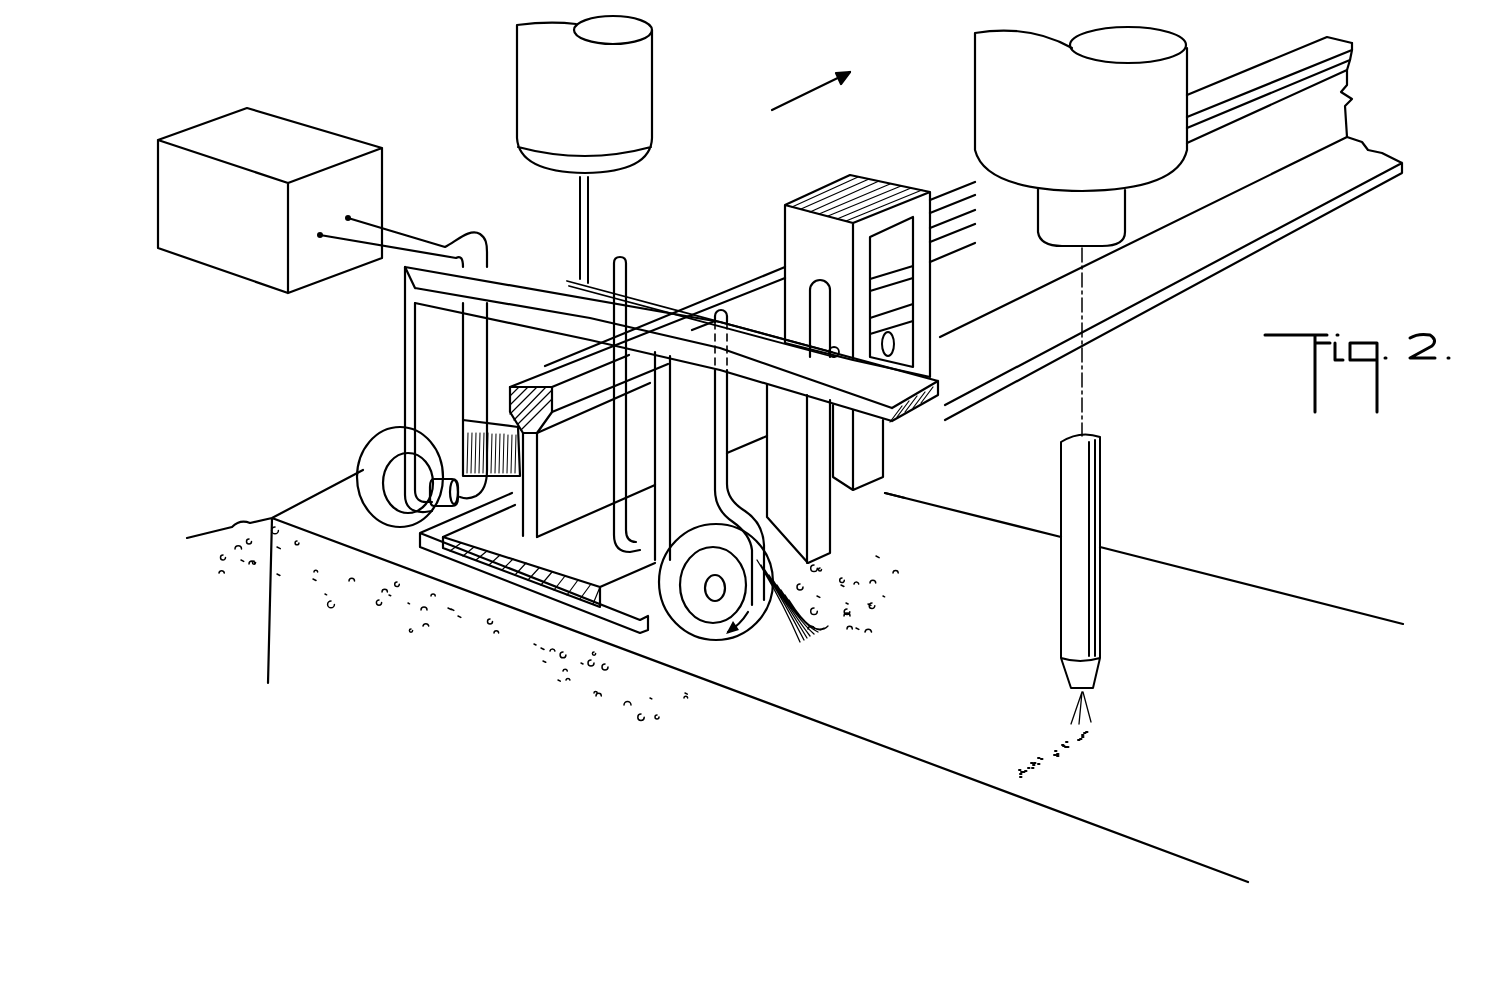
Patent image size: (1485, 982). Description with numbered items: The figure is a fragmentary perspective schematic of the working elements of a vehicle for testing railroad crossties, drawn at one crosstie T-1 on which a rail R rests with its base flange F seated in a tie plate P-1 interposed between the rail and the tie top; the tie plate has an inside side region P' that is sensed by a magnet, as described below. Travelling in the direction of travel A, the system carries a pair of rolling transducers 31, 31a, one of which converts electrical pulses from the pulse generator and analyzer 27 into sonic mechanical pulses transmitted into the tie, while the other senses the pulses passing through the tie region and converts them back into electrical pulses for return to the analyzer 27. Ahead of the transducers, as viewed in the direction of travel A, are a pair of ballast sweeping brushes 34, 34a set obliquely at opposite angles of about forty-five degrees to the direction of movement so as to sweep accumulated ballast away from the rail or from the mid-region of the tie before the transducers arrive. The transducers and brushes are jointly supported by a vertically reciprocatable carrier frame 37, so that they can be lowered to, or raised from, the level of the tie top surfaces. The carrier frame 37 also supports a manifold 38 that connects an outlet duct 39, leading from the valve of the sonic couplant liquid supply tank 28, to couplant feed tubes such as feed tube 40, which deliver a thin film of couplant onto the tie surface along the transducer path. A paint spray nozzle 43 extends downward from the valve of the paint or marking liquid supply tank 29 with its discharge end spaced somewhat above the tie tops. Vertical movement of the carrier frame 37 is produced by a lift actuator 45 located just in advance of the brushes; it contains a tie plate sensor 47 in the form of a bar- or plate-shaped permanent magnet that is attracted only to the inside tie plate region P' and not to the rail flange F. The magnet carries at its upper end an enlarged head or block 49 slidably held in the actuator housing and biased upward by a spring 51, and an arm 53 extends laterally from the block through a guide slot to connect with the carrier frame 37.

The electrical pulse generator and analyzer 27 is at (247, 272).
The sonic couplant liquid supply tank 28 is at (637, 63).
The paint or marking liquid supply tank 29 is at (1000, 107).
The rolling transducer 31 is at (697, 630).
The rolling transducer 31a is at (380, 445).
The ballast sweeping brush 34 is at (802, 628).
The ballast sweeping brush 34a is at (520, 464).
The carrier frame 37 is at (750, 360).
The manifold 38 is at (657, 302).
The outlet duct 39 is at (588, 215).
The couplant feed tube 40 is at (722, 430).
The paint spray nozzle 43 is at (1089, 489).
The lift actuator 45 is at (837, 190).
The tie plate sensor 47 is at (921, 464).
The enlarged head or block 49 is at (905, 303).
The spring 51 is at (883, 350).
The rod or arm 53 is at (783, 320).
The direction of travel A is at (811, 81).
The rail R is at (1277, 65).
The base flange F is at (1313, 195).
The railroad crosstie T-1 is at (1202, 591).
The tie plate P-1 is at (532, 587).
The inside side region of tie plate P' is at (889, 511).